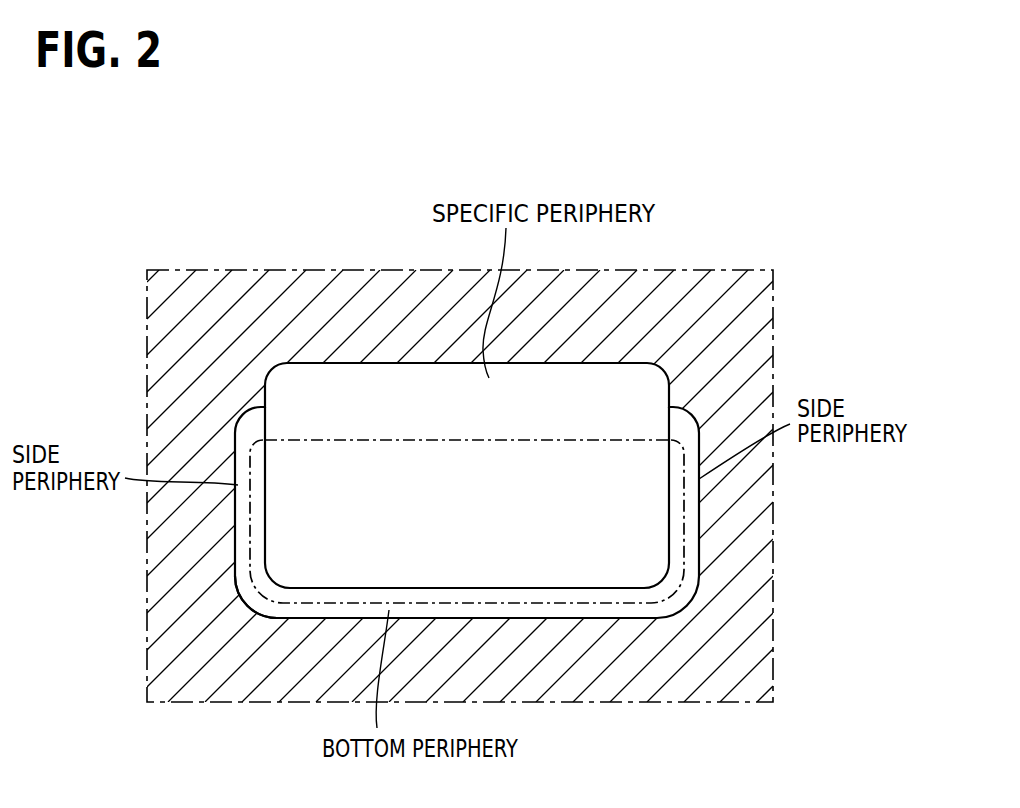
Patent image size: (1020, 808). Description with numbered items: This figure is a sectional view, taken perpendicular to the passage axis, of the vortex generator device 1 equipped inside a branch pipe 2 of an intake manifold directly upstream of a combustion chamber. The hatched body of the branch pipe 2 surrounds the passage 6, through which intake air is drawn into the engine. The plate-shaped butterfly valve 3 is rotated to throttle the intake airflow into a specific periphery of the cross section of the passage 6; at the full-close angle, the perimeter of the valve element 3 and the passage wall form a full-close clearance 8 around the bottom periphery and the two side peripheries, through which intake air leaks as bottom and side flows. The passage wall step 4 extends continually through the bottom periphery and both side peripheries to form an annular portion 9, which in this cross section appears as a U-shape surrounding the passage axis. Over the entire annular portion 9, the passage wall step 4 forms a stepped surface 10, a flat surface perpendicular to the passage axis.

The vortex generator device 1 is at (777, 266).
The branch pipe 2 is at (750, 317).
The butterfly valve 3 is at (693, 404).
The passage wall step 4 is at (667, 600).
The passage 6 is at (311, 396).
The full-close clearance 8 is at (690, 528).
The annular portion 9 is at (269, 617).
The stepped surface 10 is at (493, 563).